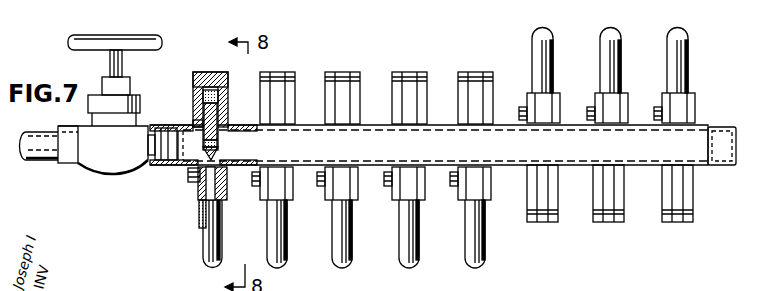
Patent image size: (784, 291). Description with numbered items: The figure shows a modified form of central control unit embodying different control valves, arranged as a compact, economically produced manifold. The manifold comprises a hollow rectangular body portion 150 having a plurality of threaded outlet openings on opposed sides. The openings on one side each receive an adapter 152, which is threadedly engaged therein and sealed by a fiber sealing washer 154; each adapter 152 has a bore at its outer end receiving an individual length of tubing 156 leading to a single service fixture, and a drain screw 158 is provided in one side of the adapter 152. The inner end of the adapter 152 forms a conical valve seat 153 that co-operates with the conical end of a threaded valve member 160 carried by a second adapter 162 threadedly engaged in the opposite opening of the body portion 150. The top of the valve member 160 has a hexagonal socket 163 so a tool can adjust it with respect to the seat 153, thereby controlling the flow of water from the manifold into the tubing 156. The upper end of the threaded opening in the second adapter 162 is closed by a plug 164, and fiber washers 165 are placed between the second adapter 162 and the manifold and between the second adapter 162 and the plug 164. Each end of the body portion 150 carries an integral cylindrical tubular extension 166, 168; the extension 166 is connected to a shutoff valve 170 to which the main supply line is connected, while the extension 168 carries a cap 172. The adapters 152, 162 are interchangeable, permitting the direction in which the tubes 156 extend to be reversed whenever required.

The hollow rectangular body portion 150 is at (512, 166).
The adapter 152 is at (661, 97).
The conical valve seat 153 is at (218, 160).
The fiber sealing washer 154 is at (228, 178).
The tubing 156 is at (667, 43).
The drain screw 158 is at (188, 181).
The threaded valve member 160 is at (218, 138).
The second adapter 162 is at (231, 91).
The hexagonal socket 163 is at (204, 112).
The plug 164 is at (212, 72).
The fiber washers 165 is at (194, 80).
The cylindrical tubular extension 166 is at (160, 164).
The cylindrical tubular extension 168 is at (722, 168).
The shutoff valve 170 is at (107, 168).
The cap 172 is at (738, 136).